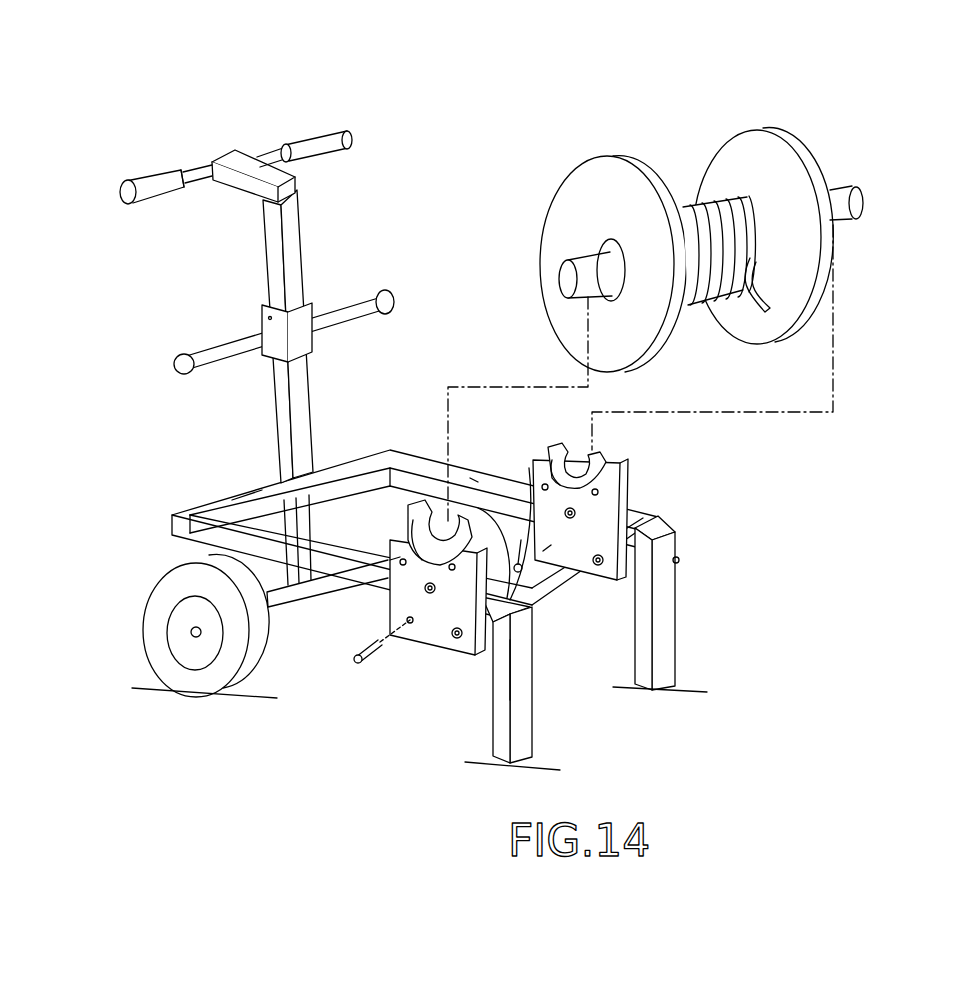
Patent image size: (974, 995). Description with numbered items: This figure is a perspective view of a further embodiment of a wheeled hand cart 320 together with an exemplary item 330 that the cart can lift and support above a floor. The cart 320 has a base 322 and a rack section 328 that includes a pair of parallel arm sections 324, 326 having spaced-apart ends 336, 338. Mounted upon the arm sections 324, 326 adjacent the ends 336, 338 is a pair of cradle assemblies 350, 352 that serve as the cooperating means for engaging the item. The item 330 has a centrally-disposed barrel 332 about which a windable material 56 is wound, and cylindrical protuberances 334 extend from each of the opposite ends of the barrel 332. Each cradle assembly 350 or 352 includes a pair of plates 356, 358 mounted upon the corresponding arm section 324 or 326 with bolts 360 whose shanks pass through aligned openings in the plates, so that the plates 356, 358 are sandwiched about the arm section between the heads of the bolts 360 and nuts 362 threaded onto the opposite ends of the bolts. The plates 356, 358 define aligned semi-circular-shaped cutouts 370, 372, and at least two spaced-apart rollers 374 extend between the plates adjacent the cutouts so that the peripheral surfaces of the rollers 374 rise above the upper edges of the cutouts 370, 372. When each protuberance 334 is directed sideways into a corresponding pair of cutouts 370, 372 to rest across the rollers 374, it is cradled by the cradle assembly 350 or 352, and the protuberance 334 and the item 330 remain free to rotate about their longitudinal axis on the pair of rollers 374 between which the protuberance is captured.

The cart 320 is at (353, 248).
The base 322 is at (283, 395).
The arm section 324 is at (197, 528).
The arm section 326 is at (468, 480).
The rack section 328 is at (470, 478).
The item 330 is at (700, 222).
The barrel 332 is at (600, 238).
The cylindrical protuberance 334 is at (566, 272).
The windable material 56 is at (712, 195).
The end 336 is at (520, 615).
The end 338 is at (672, 553).
The cradle assembly 350 is at (440, 655).
The cradle assembly 352 is at (607, 583).
The plate 356 is at (660, 520).
The plate 358 is at (521, 572).
The bolt 360 is at (428, 593).
The nut 362 is at (528, 466).
The semi-circular-shaped cutout 370 is at (390, 607).
The semi-circular-shaped cutout 372 is at (425, 518).
The roller 374 is at (255, 500).